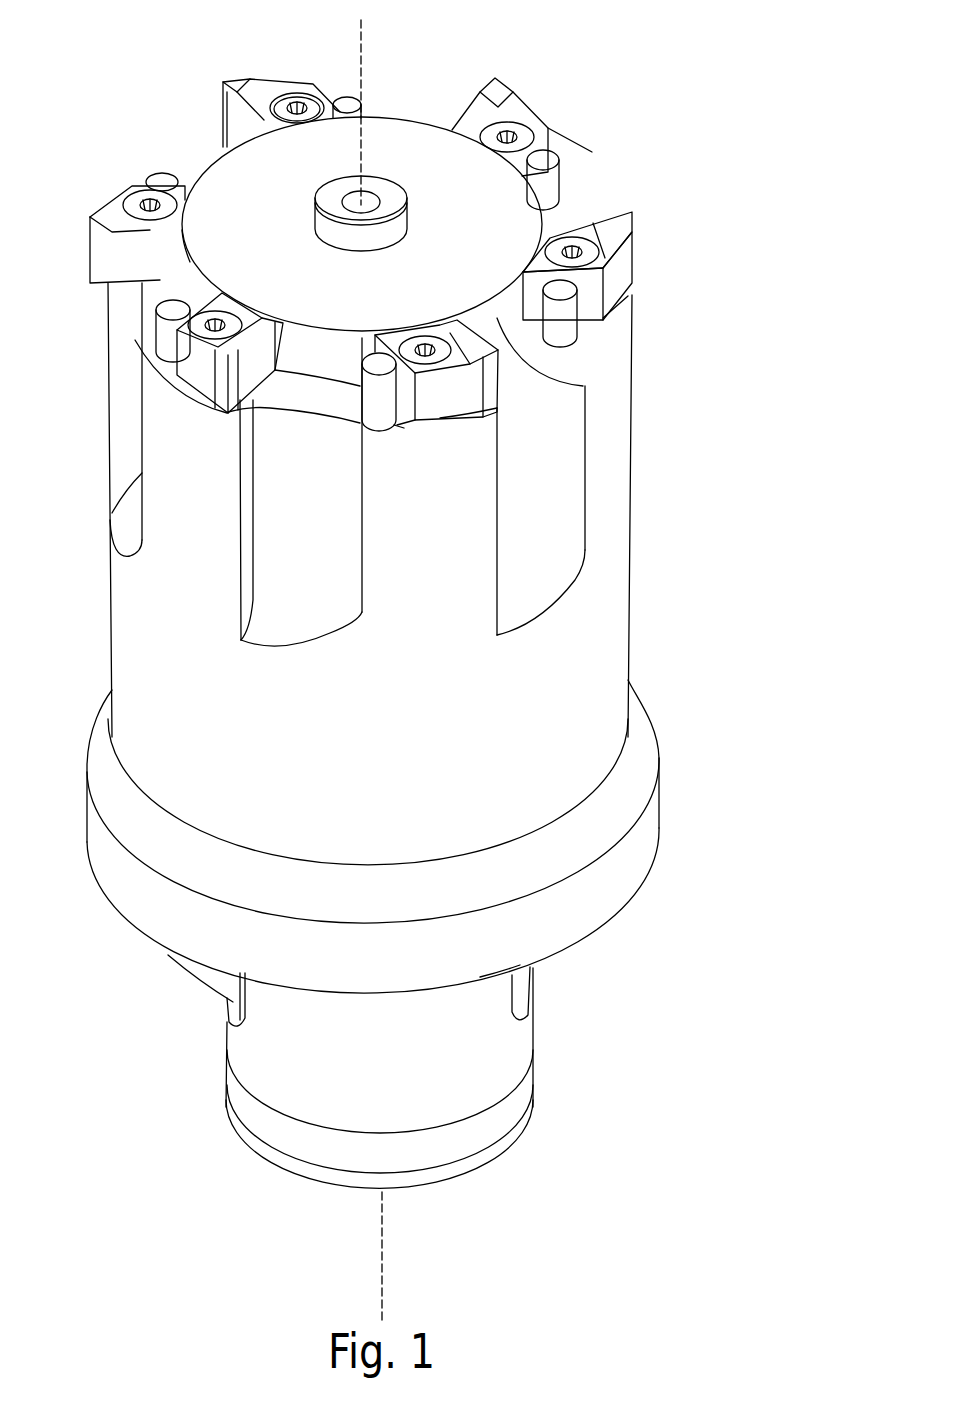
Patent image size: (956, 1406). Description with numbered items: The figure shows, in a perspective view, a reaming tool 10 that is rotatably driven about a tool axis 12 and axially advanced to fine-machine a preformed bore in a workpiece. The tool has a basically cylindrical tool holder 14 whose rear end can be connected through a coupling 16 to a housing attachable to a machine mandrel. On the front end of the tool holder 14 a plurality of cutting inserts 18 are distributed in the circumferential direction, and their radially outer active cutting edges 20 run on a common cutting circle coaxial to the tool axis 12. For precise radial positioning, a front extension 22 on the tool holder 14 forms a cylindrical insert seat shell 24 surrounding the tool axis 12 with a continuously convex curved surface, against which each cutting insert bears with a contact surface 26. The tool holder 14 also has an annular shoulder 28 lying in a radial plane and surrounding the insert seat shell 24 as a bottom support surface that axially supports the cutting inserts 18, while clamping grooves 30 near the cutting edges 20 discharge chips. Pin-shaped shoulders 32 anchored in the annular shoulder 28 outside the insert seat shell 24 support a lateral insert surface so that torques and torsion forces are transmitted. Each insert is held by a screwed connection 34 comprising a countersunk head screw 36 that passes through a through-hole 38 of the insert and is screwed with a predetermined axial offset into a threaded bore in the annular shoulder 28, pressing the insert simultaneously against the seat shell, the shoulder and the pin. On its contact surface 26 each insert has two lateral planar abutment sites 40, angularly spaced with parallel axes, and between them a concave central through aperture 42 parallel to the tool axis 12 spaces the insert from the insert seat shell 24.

The reaming tool 10 is at (218, 155).
The tool axis 12 is at (364, 30).
The tool holder 14 is at (610, 519).
The coupling 16 is at (534, 1040).
The cutting inserts 18 is at (522, 110).
The cutting edges 20 is at (630, 220).
The front extension 22 is at (403, 140).
The insert seat shell 24 is at (583, 387).
The contact surface 26 is at (513, 228).
The annular shoulder 28 is at (342, 408).
The clamping grooves 30 is at (247, 512).
The pin-shaped shoulders 32 is at (560, 156).
The screwed connection 34 is at (289, 98).
The countersunk head screw 36 is at (310, 100).
The through-hole 38 is at (281, 97).
The abutment sites 40 is at (300, 318).
The central through aperture 42 is at (418, 330).